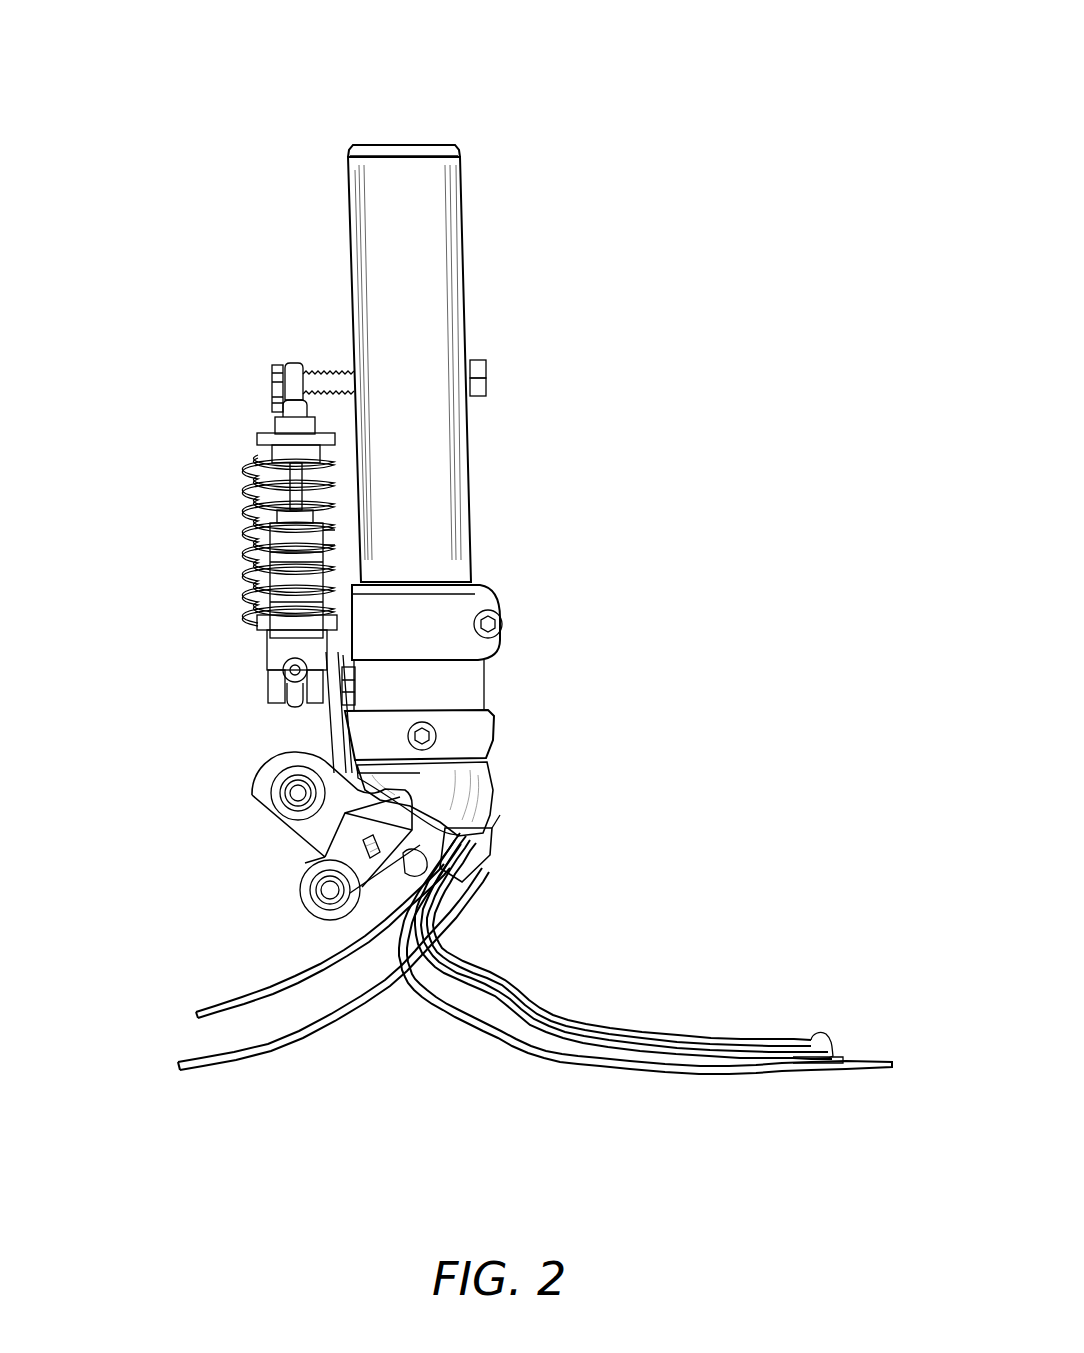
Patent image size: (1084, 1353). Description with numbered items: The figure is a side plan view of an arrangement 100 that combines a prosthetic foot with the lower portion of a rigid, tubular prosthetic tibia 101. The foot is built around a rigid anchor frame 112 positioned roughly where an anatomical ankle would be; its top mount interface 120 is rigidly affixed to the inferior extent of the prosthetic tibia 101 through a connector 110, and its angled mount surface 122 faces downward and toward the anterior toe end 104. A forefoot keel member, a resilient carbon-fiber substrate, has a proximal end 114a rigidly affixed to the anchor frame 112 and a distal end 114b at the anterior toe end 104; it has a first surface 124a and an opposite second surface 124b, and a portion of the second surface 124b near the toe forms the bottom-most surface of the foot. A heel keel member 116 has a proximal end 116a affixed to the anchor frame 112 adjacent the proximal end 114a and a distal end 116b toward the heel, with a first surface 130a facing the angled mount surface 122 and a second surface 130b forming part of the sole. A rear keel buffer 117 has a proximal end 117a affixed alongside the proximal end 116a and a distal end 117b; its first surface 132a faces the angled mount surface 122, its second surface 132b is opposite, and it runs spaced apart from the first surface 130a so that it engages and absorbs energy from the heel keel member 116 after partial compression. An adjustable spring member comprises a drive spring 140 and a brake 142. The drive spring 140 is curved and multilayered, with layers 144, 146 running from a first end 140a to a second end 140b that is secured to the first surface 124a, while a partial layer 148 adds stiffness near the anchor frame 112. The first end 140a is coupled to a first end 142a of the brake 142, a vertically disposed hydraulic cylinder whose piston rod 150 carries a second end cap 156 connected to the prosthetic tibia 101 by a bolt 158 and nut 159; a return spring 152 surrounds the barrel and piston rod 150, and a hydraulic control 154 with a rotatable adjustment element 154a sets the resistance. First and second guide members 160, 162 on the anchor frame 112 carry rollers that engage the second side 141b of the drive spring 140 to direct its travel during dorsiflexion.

The arrangement 100 is at (497, 596).
The prosthetic tibia 101 is at (470, 238).
The anterior toe end 104 is at (656, 998).
The connector 110 is at (500, 598).
The anchor frame 112 is at (503, 795).
The proximal end of forefoot keel member 114a is at (489, 872).
The distal end of forefoot keel member 114b is at (905, 1095).
The heel keel member 116 is at (284, 1007).
The proximal end of heel keel member 116a is at (412, 776).
The distal end of heel keel member 116b is at (196, 1075).
The rear keel buffer 117 is at (258, 948).
The proximal end of rear keel buffer 117a is at (430, 722).
The distal end of rear keel buffer 117b is at (131, 945).
The top mount interface 120 is at (551, 632).
The angled mount surface 122 is at (482, 860).
The first surface of forefoot keel member 124a is at (645, 996).
The second surface of forefoot keel member 124b is at (592, 1073).
The first surface of heel keel member 130a is at (195, 1058).
The second surface of heel keel member 130b is at (317, 1032).
The first surface of rear keel buffer 132a is at (297, 978).
The second surface of rear keel buffer 132b is at (215, 1033).
The drive spring 140 is at (638, 993).
The first end of drive spring 140a is at (374, 648).
The second end of drive spring 140b is at (808, 1030).
The second side of drive spring 141b is at (533, 1040).
The brake 142 is at (324, 501).
The first end of brake 142a is at (246, 690).
The first layer of drive spring 144 is at (477, 993).
The second layer of drive spring 146 is at (540, 1017).
The partial resilient layer 148 is at (597, 1025).
The piston rod 150 is at (275, 490).
The return spring 152 is at (270, 555).
The hydraulic control 154 is at (272, 607).
The rotatable adjustment element 154a is at (340, 530).
The second end cap 156 is at (285, 422).
The bolt 158 is at (282, 365).
The nut 159 is at (487, 372).
The first guide member 160 is at (280, 862).
The second guide member 162 is at (286, 812).